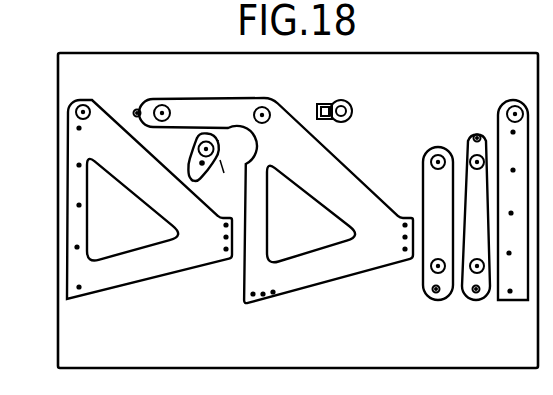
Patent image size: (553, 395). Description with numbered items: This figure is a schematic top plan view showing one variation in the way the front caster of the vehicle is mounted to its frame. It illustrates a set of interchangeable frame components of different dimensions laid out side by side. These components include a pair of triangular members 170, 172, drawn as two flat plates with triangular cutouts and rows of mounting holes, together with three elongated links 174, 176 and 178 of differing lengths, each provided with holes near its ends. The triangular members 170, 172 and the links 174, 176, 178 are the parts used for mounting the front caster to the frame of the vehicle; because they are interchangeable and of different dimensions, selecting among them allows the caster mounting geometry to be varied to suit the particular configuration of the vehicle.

The triangular member 170 is at (177, 272).
The triangular member 172 is at (320, 285).
The link 174 is at (422, 287).
The link 176 is at (467, 287).
The link 178 is at (513, 300).